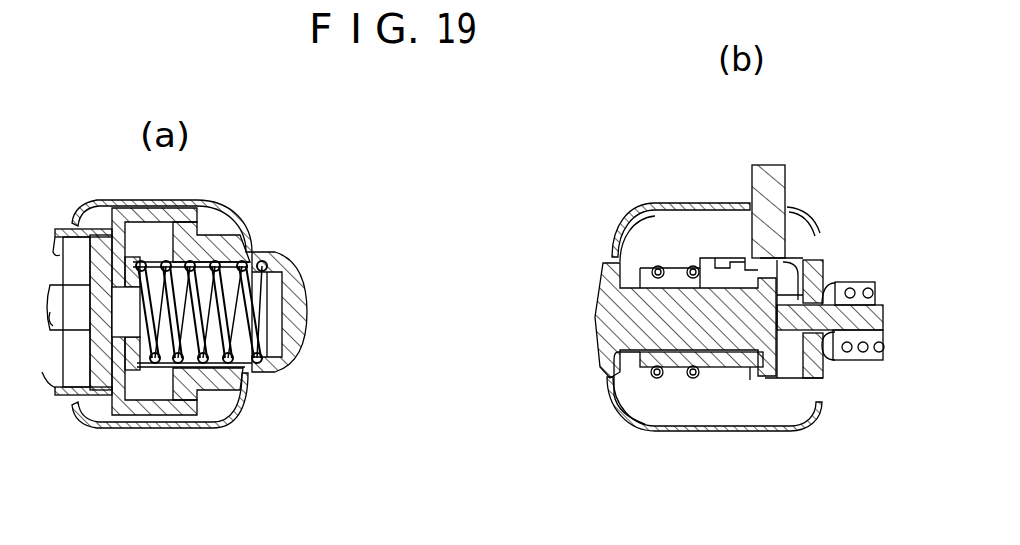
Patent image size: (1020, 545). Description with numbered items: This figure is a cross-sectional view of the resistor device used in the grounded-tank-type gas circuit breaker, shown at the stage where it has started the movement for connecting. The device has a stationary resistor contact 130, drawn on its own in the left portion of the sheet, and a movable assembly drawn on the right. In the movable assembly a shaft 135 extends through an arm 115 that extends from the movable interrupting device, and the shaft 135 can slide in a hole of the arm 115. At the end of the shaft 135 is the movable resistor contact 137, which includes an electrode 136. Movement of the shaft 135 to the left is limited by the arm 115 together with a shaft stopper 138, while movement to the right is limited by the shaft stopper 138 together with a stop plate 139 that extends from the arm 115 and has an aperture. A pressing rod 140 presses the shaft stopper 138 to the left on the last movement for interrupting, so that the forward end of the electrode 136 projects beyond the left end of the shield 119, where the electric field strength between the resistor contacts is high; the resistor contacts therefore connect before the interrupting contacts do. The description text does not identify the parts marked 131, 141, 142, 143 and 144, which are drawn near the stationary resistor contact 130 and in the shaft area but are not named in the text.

The bar 115 is at (786, 178).
The shell 119 is at (620, 413).
The bulb cap 130 is at (300, 274).
The spring guide 131 is at (253, 372).
The lower cup 135 is at (716, 368).
The body 136 is at (597, 333).
The liner 137 is at (630, 225).
The lower strip 138 is at (772, 378).
The right housing 139 is at (820, 380).
The arc segment 140 is at (795, 262).
The lower ring 141 is at (883, 365).
The upper ring 142 is at (858, 282).
The upper balls 143 is at (692, 262).
The stepped insert 144 is at (718, 258).